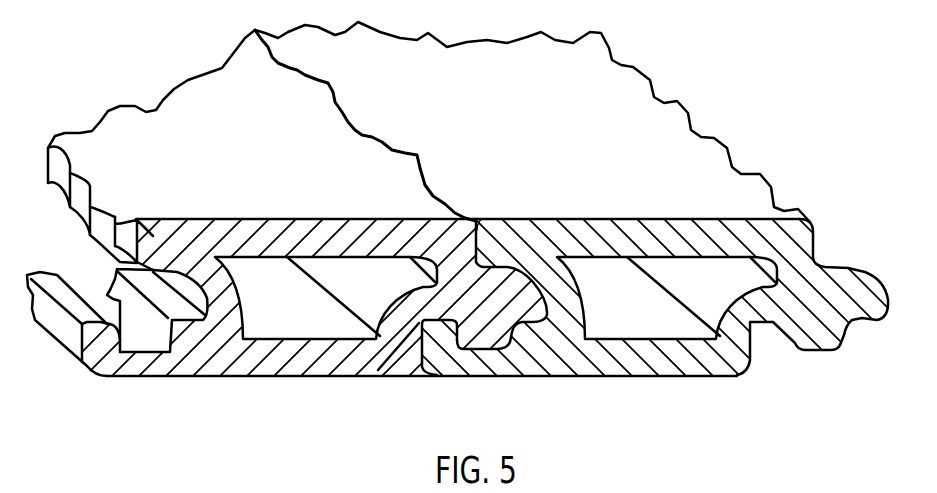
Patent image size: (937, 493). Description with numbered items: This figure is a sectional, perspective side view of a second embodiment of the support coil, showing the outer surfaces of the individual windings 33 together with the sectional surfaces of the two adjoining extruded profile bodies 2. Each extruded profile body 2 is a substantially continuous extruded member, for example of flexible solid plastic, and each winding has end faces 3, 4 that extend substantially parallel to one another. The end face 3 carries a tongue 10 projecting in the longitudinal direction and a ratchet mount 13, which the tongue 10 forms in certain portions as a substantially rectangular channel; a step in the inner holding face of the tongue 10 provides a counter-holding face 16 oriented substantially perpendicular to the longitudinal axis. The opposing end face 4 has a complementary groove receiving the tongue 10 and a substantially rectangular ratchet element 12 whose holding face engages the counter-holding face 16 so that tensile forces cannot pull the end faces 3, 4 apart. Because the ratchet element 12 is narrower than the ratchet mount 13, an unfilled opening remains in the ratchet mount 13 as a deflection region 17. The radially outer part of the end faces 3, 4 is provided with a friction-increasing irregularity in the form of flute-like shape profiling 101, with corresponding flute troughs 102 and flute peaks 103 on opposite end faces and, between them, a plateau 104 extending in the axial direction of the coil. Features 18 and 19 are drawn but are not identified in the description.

The extruded profile body 2 is at (670, 376).
The end face 3 is at (470, 249).
The end face 4 is at (490, 234).
The tongue 10 is at (842, 272).
The ratchet element 12 is at (458, 360).
The ratchet mount 13 is at (767, 345).
The counter-holding face 16 is at (795, 349).
The deflection region 17 is at (418, 343).
The recess 18 is at (305, 316).
The notch 19 is at (856, 333).
The windings 33 is at (263, 219).
The flute-like shape profiling 101 is at (295, 58).
The flute troughs 102 is at (70, 152).
The flute peaks 103 is at (105, 207).
The plateau 104 is at (87, 177).